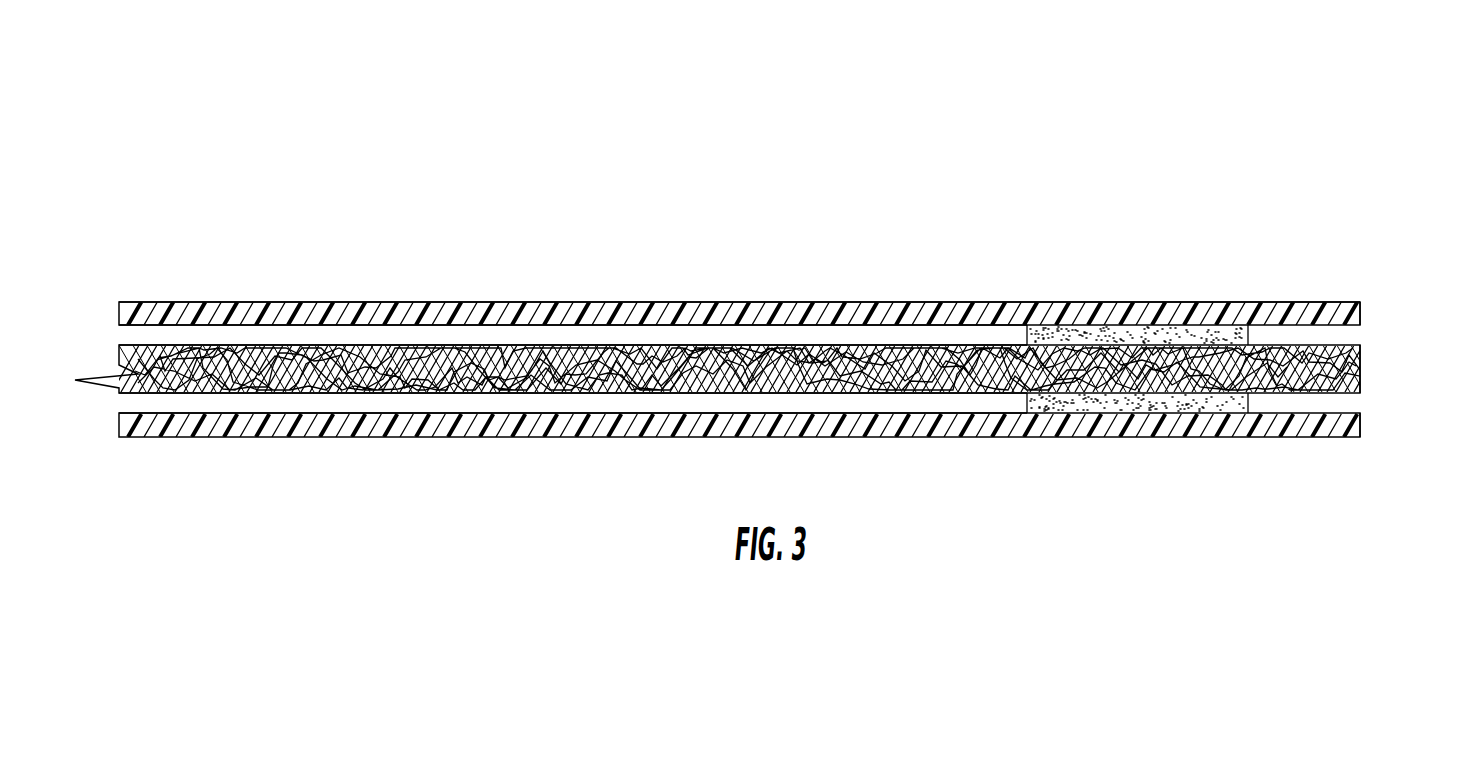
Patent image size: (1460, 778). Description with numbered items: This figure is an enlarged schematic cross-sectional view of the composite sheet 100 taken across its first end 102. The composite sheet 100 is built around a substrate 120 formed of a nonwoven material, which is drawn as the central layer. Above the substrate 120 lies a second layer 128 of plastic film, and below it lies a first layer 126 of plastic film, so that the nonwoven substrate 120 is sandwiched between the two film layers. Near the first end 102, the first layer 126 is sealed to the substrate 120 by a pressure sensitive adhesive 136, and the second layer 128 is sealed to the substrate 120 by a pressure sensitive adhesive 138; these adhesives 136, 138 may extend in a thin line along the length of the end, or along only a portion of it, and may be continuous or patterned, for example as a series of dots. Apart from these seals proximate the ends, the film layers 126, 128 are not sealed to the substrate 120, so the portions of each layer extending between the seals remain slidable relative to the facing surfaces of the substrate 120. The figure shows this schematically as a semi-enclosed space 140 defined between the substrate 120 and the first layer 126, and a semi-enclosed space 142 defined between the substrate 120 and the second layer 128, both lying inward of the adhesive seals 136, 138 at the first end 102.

The composite sheet 100 is at (1228, 157).
The first end 102 is at (1393, 347).
The substrate 120 is at (540, 372).
The first layer of plastic film 126 is at (645, 425).
The second layer of plastic film 128 is at (637, 315).
The pressure sensitive adhesive 136 is at (1197, 405).
The pressure sensitive adhesive 138 is at (1171, 334).
The semi-enclosed space 140 is at (831, 397).
The semi-enclosed space 142 is at (831, 338).